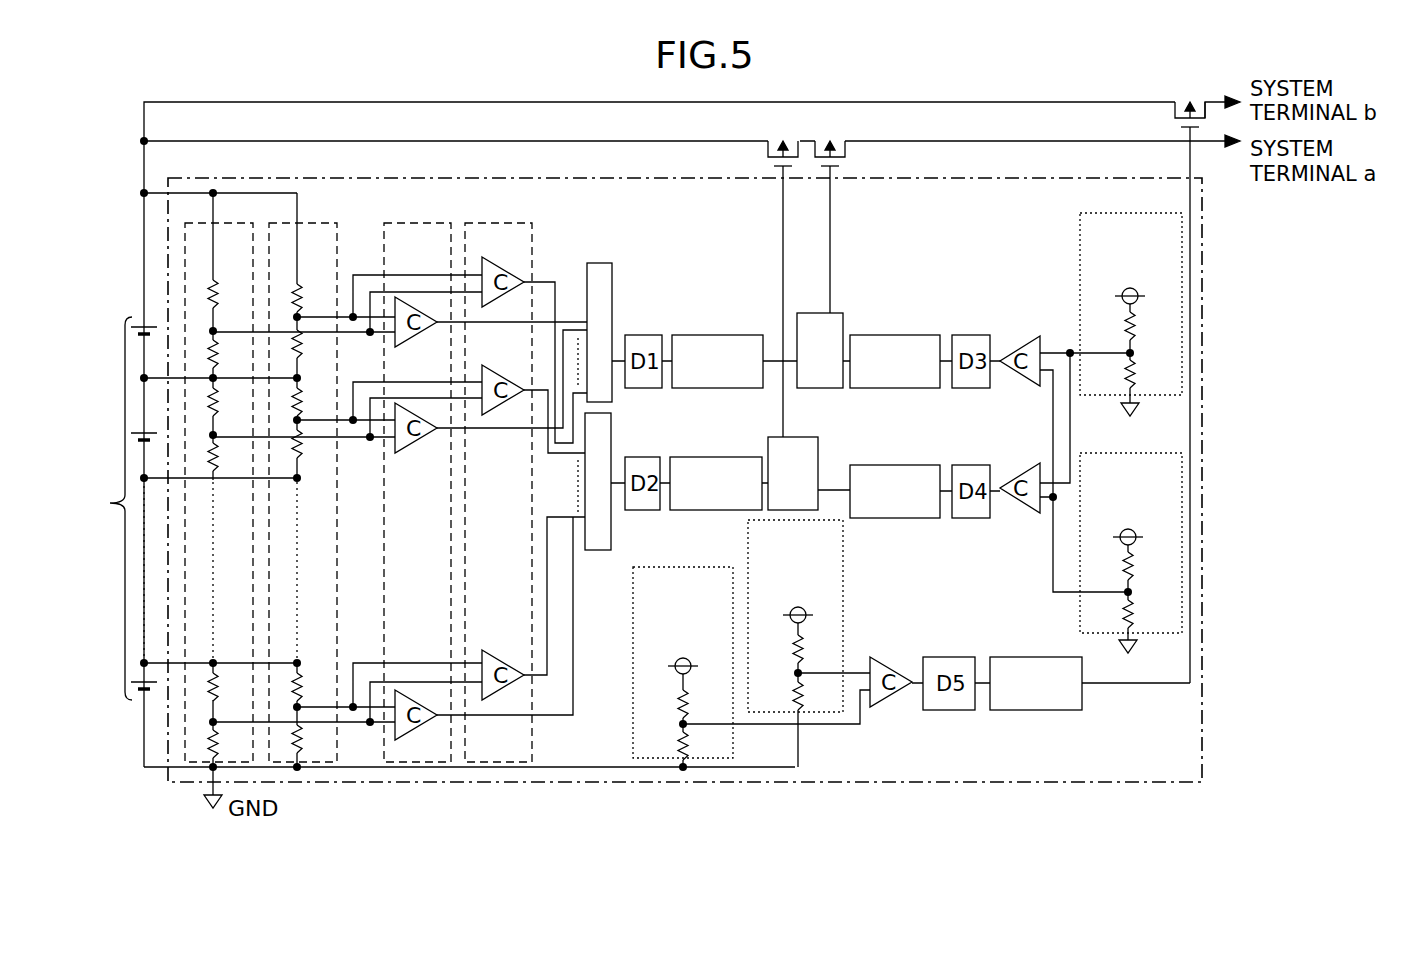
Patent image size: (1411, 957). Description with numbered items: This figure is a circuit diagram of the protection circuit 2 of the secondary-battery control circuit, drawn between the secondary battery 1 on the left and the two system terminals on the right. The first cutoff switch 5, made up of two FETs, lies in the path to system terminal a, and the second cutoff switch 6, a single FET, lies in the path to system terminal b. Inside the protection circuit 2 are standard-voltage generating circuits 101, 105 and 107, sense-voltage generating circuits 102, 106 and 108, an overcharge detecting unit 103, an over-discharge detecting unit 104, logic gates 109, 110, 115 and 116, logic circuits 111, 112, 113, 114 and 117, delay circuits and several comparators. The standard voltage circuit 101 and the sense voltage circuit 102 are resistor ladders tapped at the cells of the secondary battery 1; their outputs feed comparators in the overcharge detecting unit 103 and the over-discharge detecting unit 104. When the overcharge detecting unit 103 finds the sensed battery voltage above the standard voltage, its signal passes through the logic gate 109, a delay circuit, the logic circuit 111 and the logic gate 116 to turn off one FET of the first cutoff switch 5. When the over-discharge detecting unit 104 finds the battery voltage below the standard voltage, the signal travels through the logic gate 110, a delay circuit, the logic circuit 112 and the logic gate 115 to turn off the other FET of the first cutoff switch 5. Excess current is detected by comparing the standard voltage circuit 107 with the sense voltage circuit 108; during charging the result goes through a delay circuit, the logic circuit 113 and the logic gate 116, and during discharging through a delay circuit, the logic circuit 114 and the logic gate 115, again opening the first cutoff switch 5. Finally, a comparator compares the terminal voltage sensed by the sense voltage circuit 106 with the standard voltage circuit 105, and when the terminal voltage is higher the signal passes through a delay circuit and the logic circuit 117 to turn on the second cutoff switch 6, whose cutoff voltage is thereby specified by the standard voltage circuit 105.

The secondary battery 1 is at (109, 508).
The protection circuit 2 is at (1202, 716).
The first cutoff switch 5 is at (838, 136).
The second cutoff switch 6 is at (1184, 95).
The standard-voltage generating circuit 101 is at (226, 223).
The sense-voltage generating circuit 102 is at (308, 223).
The overcharge detecting unit 103 is at (393, 223).
The over-discharge detecting unit 104 is at (475, 223).
The standard-voltage generating circuit 105 is at (655, 568).
The sense-voltage generating circuit 106 is at (845, 562).
The standard-voltage generating circuit 107 is at (1102, 215).
The sense-voltage generating circuit 108 is at (1095, 455).
The logic gate 109 is at (613, 283).
The logic gate 110 is at (612, 437).
The logic circuit 111 is at (695, 335).
The logic circuit 112 is at (690, 457).
The logic circuit 113 is at (898, 335).
The logic circuit 114 is at (898, 465).
The logic gate 115 is at (818, 445).
The logic gate 116 is at (843, 320).
The logic circuit 117 is at (1005, 657).